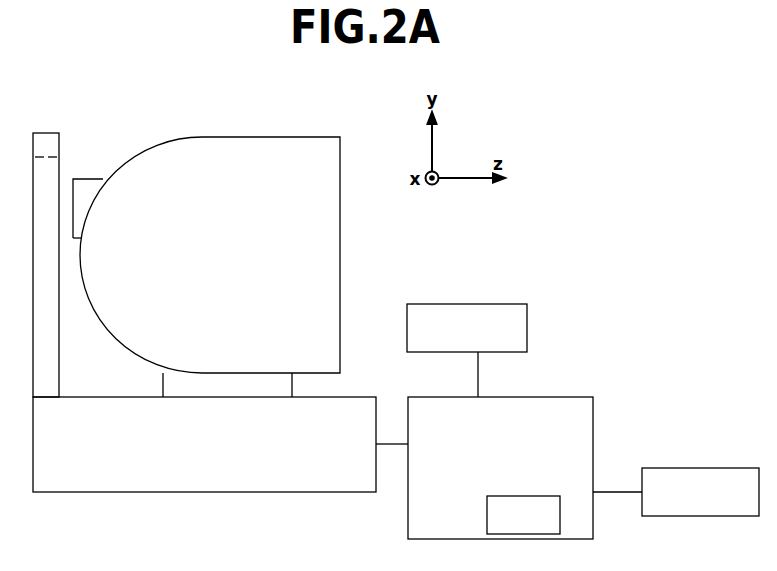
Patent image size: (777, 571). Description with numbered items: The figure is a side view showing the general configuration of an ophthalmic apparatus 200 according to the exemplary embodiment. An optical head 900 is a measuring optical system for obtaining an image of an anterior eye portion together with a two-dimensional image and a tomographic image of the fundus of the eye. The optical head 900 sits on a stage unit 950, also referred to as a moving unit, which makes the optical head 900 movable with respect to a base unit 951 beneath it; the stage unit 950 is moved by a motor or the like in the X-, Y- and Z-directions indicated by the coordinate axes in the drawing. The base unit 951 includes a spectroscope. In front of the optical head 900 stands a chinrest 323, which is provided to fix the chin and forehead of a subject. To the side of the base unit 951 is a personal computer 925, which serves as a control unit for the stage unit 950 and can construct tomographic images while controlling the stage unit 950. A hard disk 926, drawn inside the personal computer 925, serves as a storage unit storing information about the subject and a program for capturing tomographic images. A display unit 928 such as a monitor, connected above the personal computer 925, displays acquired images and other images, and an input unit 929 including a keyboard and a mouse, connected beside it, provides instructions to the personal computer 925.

The image forming apparatus 200 is at (219, 89).
The chinrest 323 is at (46, 133).
The optical head 900 is at (206, 255).
The stage unit 950 is at (163, 381).
The base unit 951 is at (180, 493).
The personal computer 925 is at (500, 468).
The hard disk 926 is at (523, 515).
The display unit 928 is at (467, 350).
The input unit 929 is at (676, 492).